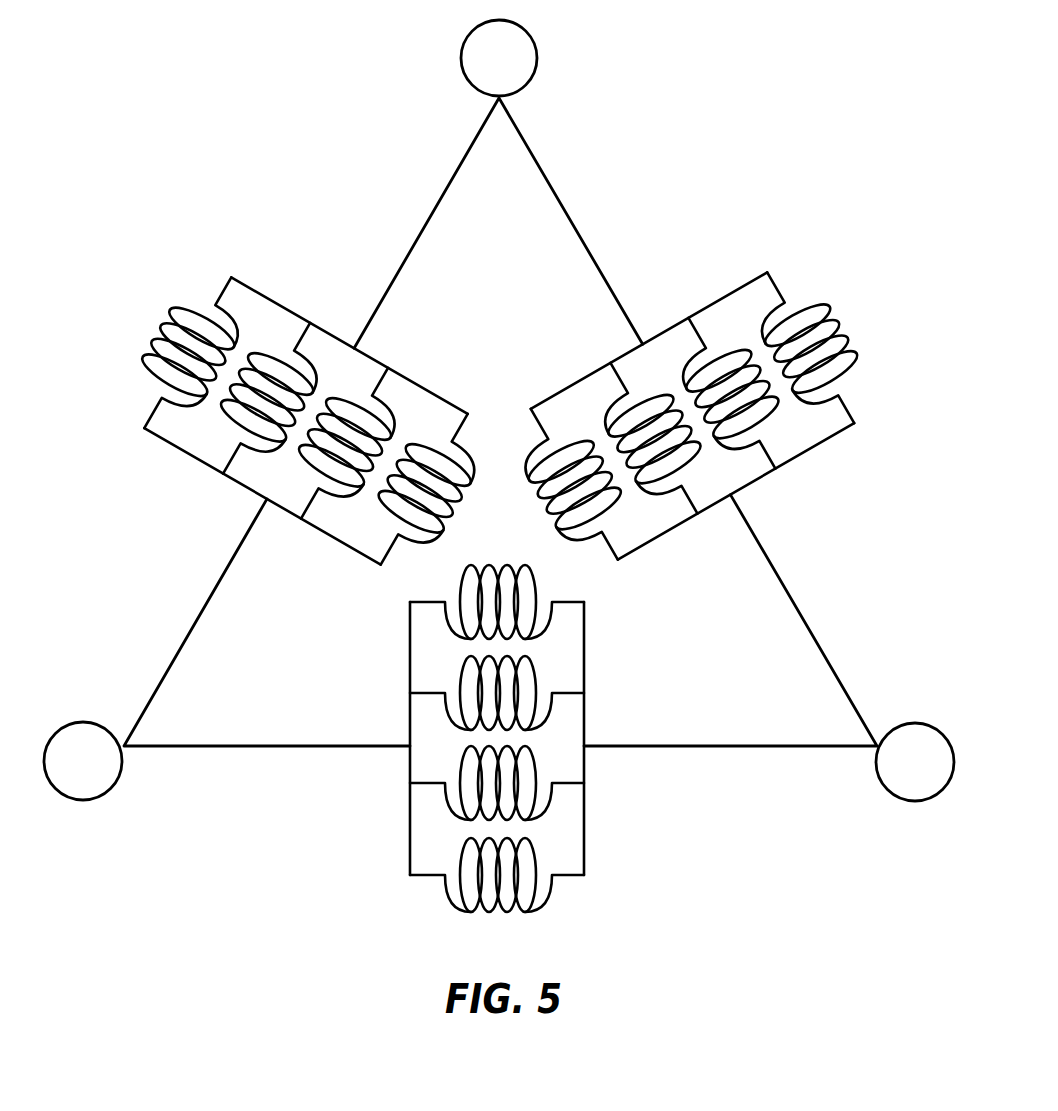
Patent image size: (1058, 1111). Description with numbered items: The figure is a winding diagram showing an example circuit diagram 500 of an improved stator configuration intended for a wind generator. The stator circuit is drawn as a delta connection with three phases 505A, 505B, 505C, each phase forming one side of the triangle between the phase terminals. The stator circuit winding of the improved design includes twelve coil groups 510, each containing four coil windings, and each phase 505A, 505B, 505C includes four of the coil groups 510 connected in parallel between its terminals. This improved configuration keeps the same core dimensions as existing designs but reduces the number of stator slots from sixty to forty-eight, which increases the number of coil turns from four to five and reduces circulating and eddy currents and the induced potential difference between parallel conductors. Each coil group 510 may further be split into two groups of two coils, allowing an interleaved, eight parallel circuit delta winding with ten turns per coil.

The circuit diagram 500 is at (638, 78).
The phase 505A is at (132, 293).
The phase 505B is at (853, 290).
The phase 505C is at (388, 832).
The coil group 510 is at (765, 325).